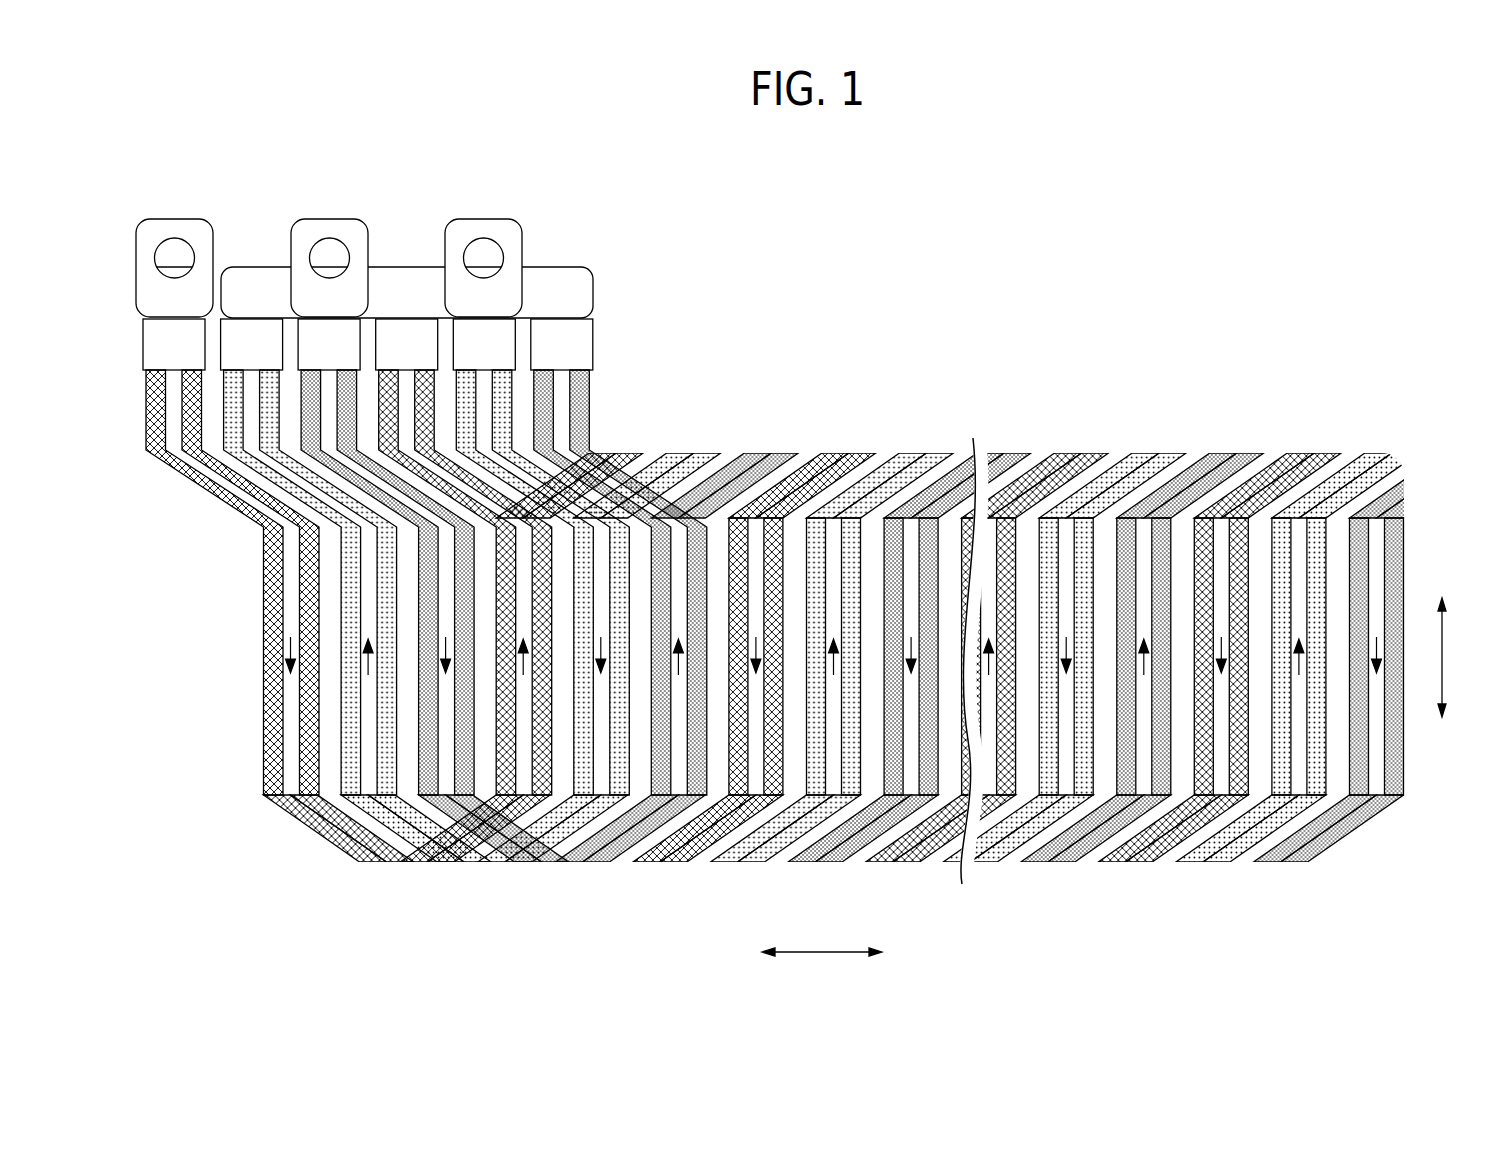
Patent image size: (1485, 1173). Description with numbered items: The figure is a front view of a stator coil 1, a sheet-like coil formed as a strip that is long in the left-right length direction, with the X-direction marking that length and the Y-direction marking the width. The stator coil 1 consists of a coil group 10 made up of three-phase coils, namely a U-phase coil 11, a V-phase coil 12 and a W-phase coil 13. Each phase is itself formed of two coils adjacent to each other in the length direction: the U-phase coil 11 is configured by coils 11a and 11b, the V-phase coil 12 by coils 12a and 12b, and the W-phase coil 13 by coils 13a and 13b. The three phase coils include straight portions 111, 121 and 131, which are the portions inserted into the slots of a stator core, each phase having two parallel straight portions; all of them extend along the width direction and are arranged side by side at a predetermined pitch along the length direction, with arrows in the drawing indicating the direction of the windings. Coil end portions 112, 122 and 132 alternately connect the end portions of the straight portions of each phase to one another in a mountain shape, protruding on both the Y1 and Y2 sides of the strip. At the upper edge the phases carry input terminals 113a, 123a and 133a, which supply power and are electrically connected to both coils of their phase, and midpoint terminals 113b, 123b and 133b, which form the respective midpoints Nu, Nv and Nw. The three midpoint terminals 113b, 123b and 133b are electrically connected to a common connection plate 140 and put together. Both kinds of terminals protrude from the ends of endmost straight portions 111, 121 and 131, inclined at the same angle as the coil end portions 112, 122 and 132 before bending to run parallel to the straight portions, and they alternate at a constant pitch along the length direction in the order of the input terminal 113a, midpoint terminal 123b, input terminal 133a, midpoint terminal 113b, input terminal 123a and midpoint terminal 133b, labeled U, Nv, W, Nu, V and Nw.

The stator coil 1 is at (1020, 290).
The coil group 10 is at (792, 652).
The U-phase coil 11 is at (232, 582).
The coil 11a is at (265, 552).
The coil 11b is at (302, 583).
The V-phase coil 12 is at (272, 582).
The coil 12a is at (345, 638).
The coil 12b is at (385, 680).
The W-phase coil 13 is at (310, 582).
The coil 13a is at (425, 738).
The coil 13b is at (460, 772).
The straight portion 111 is at (1247, 553).
The coil end portion 112 is at (657, 453).
The straight portion 121 is at (1315, 553).
The coil end portion 122 is at (735, 453).
The straight portion 131 is at (1397, 553).
The coil end portion 132 is at (812, 453).
The input terminal 113a is at (175, 219).
The midpoint terminal 113b is at (405, 318).
The input terminal 123a is at (483, 219).
The midpoint terminal 123b is at (250, 318).
The input terminal 133a is at (330, 219).
The midpoint terminal 133b is at (560, 318).
The common connection plate 140 is at (593, 290).